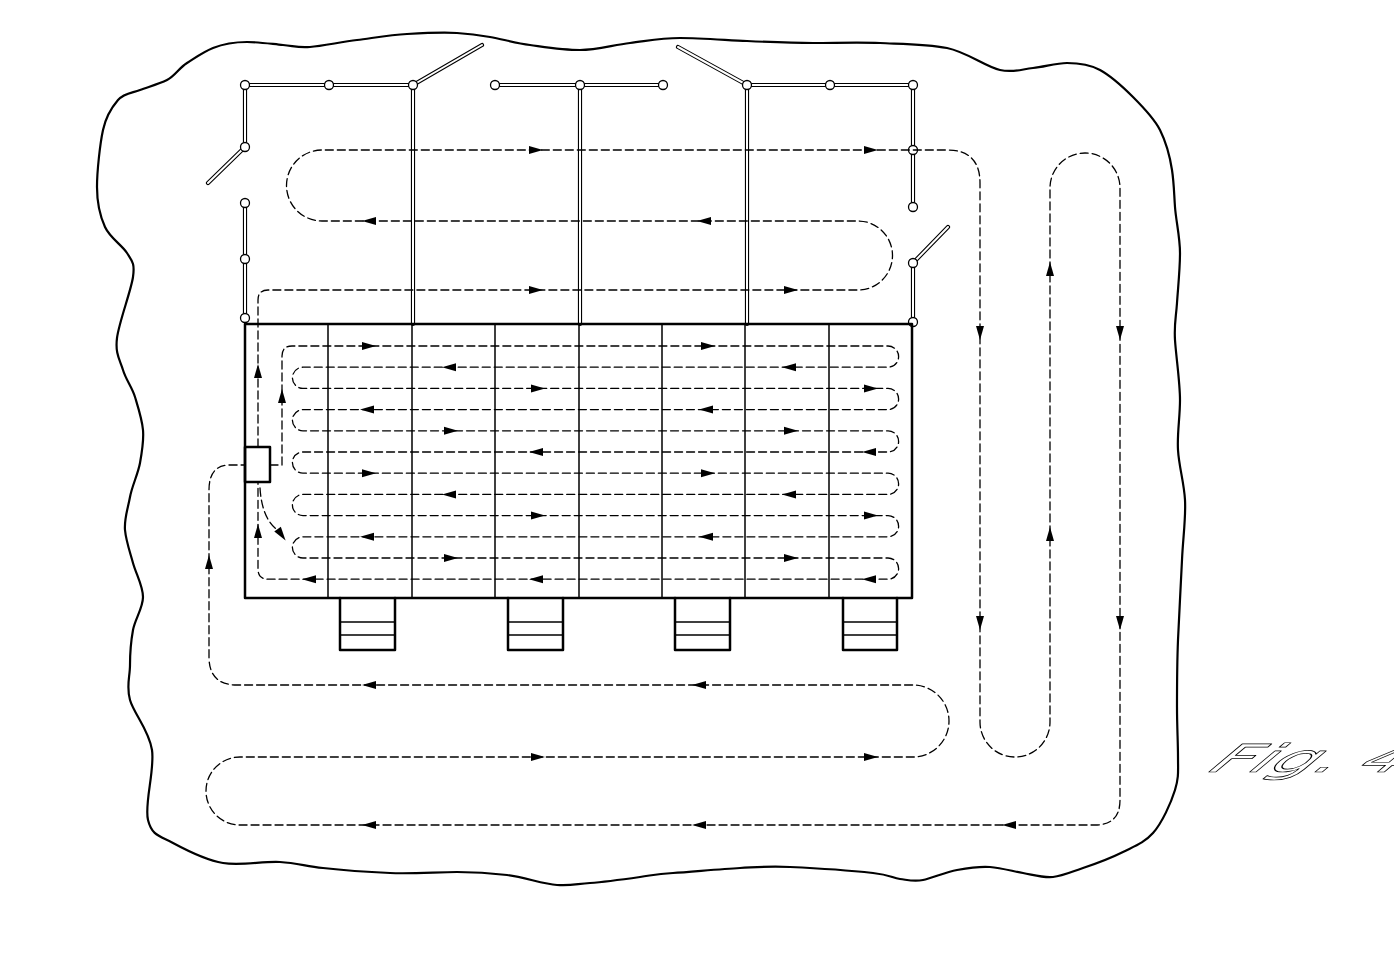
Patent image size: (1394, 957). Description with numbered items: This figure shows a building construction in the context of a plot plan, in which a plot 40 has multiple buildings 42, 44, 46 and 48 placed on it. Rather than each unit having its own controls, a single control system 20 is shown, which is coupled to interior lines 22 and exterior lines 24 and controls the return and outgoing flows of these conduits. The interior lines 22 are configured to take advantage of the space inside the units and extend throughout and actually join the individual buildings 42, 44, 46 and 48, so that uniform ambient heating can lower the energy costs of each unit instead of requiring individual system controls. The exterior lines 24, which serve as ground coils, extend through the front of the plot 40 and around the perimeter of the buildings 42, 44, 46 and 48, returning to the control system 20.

The mobile robot 20 is at (244, 458).
The cleaning route 22 is at (297, 551).
The travel route 24 is at (208, 500).
The environment 40 is at (1190, 125).
The docking station 42 is at (306, 626).
The docking station 44 is at (464, 626).
The docking station 46 is at (628, 626).
The docking station 48 is at (803, 626).